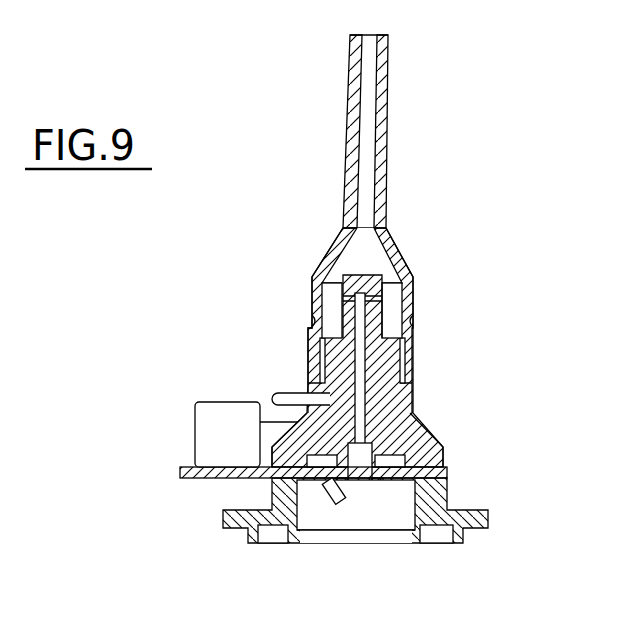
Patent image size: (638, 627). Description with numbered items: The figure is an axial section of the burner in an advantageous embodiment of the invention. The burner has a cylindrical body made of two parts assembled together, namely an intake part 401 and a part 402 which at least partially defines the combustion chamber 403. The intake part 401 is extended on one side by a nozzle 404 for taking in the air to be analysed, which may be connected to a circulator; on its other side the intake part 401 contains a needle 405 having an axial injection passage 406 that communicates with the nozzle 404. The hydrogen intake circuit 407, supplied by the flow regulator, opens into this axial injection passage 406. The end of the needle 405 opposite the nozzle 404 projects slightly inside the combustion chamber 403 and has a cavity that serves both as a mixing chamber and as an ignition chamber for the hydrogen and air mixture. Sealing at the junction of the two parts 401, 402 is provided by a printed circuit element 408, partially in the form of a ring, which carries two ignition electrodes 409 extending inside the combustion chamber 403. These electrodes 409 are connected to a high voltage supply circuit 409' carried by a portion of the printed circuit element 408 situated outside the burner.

The intake part 401 is at (426, 341).
The combustion chamber part 402 is at (456, 456).
The combustion chamber 403 is at (402, 527).
The nozzle 404 is at (380, 117).
The needle 405 is at (322, 366).
The axial injection passage 406 is at (352, 308).
The hydrogen intake circuit 407 is at (285, 393).
The printed circuit element 408 is at (192, 478).
The ignition electrodes 409 is at (344, 538).
The high voltage supply circuit 409' is at (214, 417).